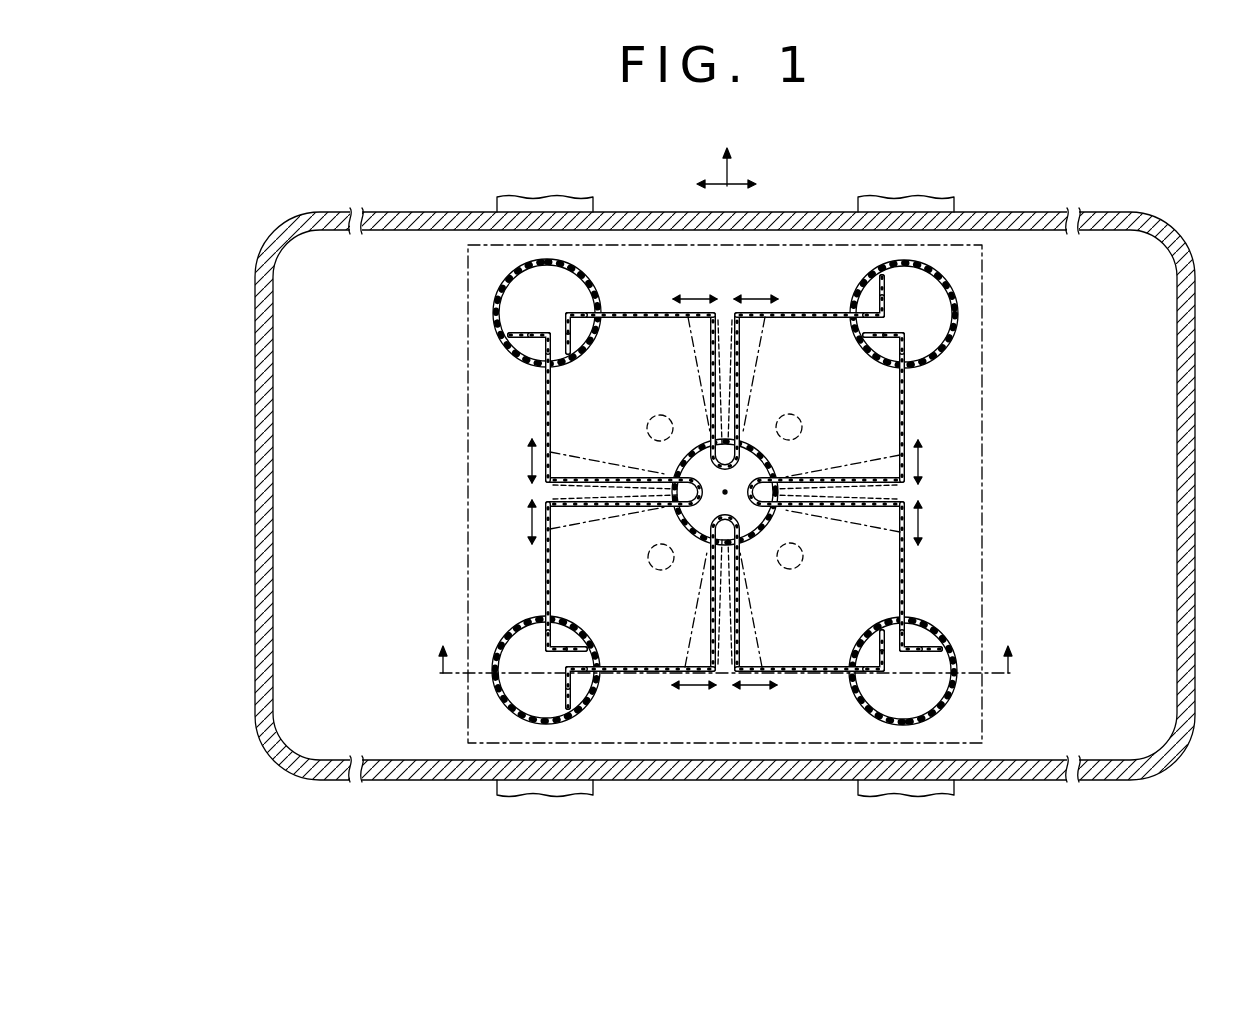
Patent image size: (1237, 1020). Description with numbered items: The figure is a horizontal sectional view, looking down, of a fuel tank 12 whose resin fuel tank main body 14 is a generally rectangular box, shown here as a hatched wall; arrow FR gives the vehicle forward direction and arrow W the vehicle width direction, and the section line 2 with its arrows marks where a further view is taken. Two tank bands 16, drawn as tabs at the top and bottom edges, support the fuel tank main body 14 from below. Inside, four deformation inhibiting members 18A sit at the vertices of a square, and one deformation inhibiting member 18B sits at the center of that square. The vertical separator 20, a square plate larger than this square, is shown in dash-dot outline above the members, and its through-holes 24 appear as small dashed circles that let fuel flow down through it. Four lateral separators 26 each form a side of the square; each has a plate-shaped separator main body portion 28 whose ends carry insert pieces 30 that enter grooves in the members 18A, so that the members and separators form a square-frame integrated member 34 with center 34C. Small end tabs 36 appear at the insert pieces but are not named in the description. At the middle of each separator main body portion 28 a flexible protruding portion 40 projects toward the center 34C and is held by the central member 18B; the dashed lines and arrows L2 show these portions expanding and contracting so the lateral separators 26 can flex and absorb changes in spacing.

The fuel tank 12 is at (1181, 191).
The fuel tank main body 14 is at (282, 759).
The tank band 16 is at (497, 788).
The deformation inhibiting member 18A is at (500, 297).
The deformation inhibiting member 18B is at (759, 444).
The vertical separator 20 is at (1000, 412).
The through-hole 24 is at (647, 428).
The lateral separator 26 is at (641, 306).
The separator main body portion 28 is at (806, 314).
The insert piece 30 is at (575, 314).
The integrated member 34 is at (490, 383).
The center of the integrated member 34C is at (735, 497).
The engaging end portion 36 is at (505, 337).
The flexible protruding portion 40 is at (704, 388).
The section line 2 is at (443, 673).
The arrows L2 is at (696, 297).
The arrow FR is at (725, 173).
The arrow W is at (732, 181).